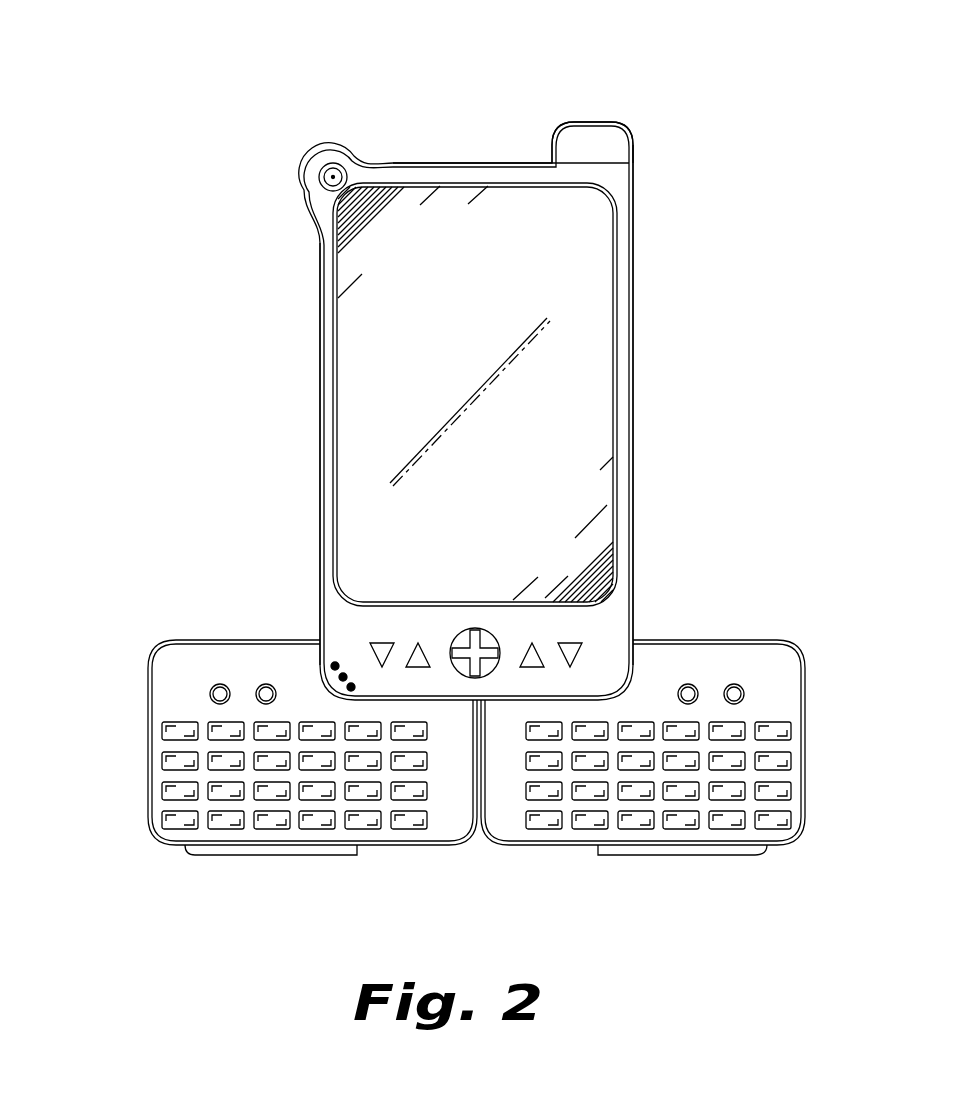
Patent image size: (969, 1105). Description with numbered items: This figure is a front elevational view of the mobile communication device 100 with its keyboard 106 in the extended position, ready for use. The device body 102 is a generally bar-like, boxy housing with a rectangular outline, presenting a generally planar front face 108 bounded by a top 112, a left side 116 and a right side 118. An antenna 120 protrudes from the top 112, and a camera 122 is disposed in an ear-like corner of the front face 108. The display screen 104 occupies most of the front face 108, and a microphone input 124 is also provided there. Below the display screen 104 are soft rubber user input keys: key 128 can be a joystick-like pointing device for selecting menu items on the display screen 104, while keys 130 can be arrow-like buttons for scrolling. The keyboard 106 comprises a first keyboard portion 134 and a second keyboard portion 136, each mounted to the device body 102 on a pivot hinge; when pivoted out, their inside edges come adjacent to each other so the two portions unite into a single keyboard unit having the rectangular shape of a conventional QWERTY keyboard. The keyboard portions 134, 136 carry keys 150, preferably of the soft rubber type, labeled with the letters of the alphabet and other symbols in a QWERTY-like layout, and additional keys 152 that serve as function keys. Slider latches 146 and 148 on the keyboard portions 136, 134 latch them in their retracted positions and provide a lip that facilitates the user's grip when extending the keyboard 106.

The mobile communication device 100 is at (272, 312).
The device body 102 is at (638, 337).
The display screen 104 is at (579, 292).
The keyboard 106 is at (417, 850).
The front face 108 is at (617, 507).
The top 112 is at (455, 166).
The left side 116 is at (320, 450).
The right side 118 is at (633, 394).
The antenna 120 is at (634, 150).
The camera 122 is at (316, 177).
The microphone input 124 is at (330, 665).
The user input key 128 is at (472, 630).
The user input keys 130 is at (380, 644).
The first keyboard portion 134 is at (807, 680).
The second keyboard portion 136 is at (148, 680).
The slider latch 146 is at (217, 857).
The slider latch 148 is at (716, 856).
The keys 150 is at (162, 792).
The additional keys 152 is at (257, 686).